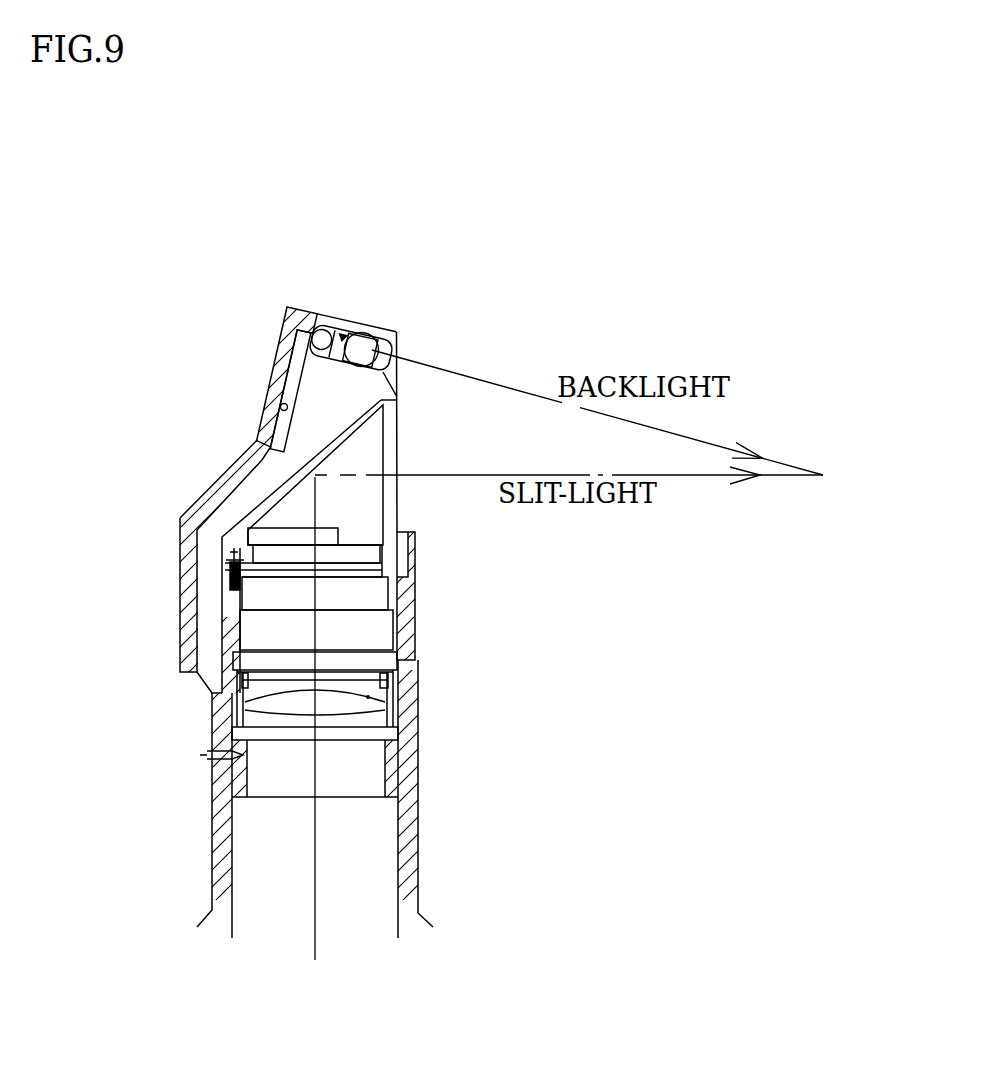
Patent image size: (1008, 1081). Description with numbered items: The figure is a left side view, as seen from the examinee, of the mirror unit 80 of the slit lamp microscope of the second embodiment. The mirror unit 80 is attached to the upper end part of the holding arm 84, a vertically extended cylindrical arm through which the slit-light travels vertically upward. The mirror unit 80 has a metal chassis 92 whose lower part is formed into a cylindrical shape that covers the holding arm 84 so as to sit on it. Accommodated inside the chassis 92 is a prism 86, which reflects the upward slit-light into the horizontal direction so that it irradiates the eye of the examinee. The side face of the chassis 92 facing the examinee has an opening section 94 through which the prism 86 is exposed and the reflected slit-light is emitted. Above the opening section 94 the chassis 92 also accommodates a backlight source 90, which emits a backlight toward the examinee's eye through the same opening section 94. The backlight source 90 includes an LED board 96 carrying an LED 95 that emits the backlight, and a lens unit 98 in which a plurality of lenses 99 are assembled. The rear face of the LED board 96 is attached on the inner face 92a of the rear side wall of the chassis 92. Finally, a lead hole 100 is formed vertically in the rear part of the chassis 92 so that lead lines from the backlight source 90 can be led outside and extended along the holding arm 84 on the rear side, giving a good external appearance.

The mirror unit 80 is at (296, 245).
The holding arm 84 is at (210, 793).
The prism 86 is at (368, 490).
The backlight source 90 is at (397, 349).
The chassis 92 is at (192, 582).
The inner face of rear side wall 92a is at (280, 407).
The opening section 94 is at (395, 439).
The LED 95 is at (318, 330).
The LED board 96 is at (297, 367).
The lens unit 98 is at (349, 328).
The lenses 99 is at (338, 327).
The lead hole 100 is at (205, 602).